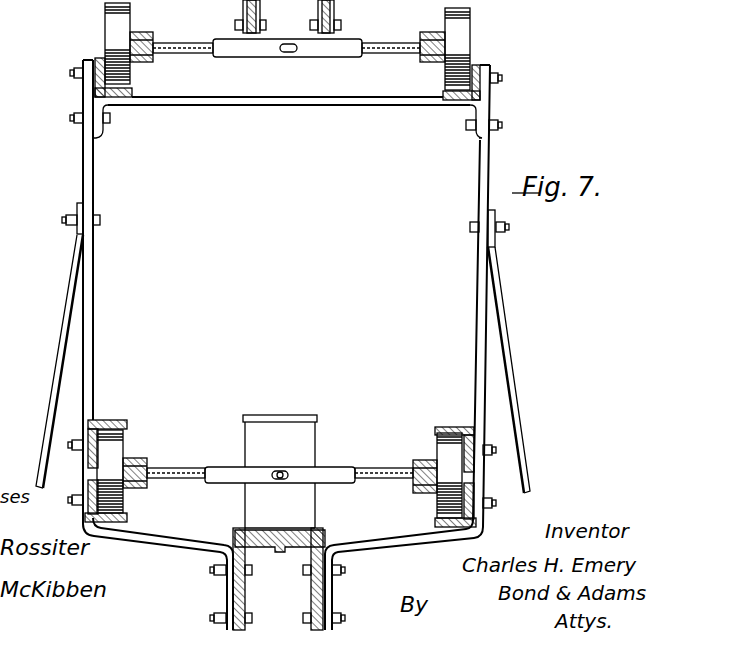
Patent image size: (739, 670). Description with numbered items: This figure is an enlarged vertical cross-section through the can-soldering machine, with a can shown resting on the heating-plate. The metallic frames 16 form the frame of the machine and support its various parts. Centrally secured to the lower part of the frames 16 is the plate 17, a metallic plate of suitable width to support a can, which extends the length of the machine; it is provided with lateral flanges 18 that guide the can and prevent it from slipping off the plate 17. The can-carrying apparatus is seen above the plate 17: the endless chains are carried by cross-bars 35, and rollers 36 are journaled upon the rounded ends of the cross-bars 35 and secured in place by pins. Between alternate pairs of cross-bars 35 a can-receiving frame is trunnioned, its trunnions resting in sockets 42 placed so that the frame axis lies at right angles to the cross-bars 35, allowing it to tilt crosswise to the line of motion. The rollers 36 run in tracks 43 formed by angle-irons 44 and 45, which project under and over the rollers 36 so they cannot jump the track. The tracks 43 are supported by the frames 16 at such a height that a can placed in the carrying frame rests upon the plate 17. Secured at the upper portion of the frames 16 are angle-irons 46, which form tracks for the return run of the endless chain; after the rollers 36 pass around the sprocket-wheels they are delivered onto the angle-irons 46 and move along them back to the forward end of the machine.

The metallic frames 16 is at (89, 339).
The plate 17 is at (303, 548).
The lateral flanges 18 is at (235, 532).
The cross-bars 35 is at (413, 15).
The rollers 36 is at (443, 449).
The sockets 42 is at (292, 34).
The tracks 43 is at (283, 349).
The angle-iron 44 is at (172, 526).
The angle-iron 45 is at (140, 413).
The angle-irons 46 is at (122, 96).